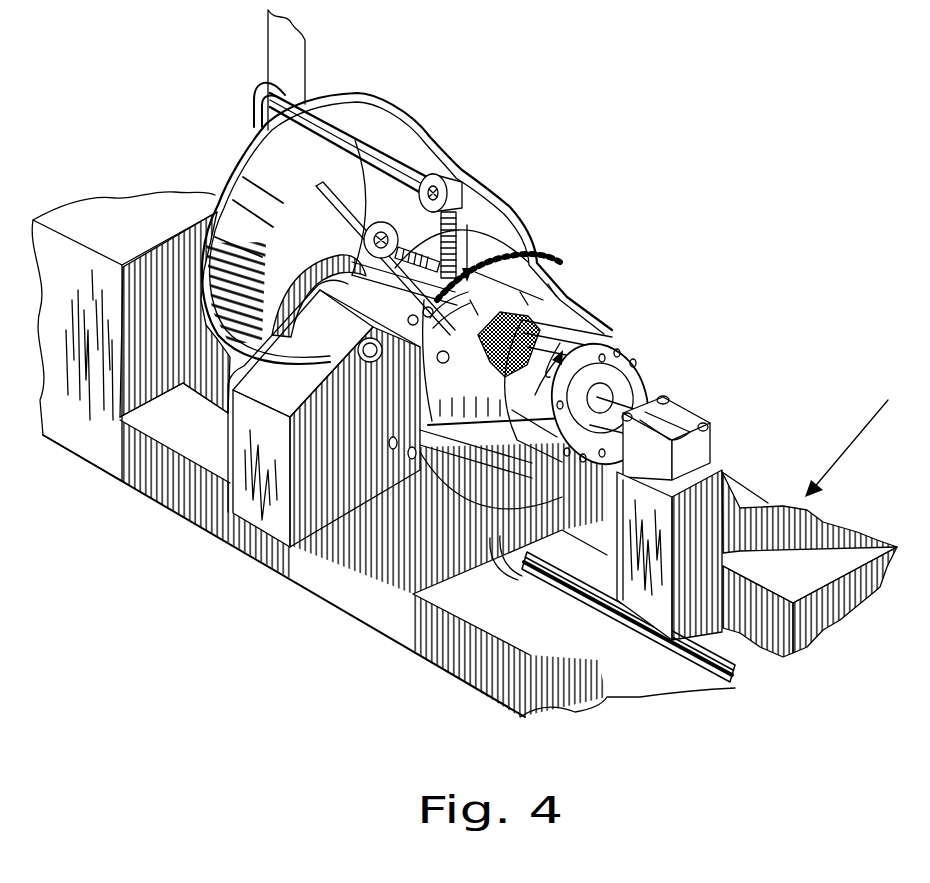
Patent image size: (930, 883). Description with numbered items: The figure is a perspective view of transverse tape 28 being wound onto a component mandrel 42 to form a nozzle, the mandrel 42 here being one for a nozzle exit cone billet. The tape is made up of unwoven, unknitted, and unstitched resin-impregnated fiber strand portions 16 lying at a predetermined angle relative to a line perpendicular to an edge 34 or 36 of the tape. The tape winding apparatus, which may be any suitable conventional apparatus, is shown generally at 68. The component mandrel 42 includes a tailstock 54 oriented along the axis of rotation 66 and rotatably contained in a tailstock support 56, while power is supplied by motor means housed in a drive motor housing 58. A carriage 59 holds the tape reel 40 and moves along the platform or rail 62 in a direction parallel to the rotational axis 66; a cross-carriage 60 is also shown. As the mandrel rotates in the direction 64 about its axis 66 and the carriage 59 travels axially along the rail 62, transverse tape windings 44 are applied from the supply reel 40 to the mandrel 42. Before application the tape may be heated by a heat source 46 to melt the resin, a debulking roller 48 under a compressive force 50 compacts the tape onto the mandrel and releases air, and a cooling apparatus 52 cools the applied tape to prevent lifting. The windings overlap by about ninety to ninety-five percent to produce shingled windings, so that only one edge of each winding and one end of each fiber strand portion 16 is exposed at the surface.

The fiber strand portions 16 is at (482, 262).
The transverse tape 28 is at (535, 262).
The edge of the tape 34 is at (522, 261).
The edge of the tape 36 is at (541, 279).
The material supply spool 40 is at (279, 295).
The component mandrel 42 is at (597, 332).
The transverse tape windings 44 is at (493, 258).
The heat source 46 is at (381, 229).
The debulking roller 48 is at (448, 302).
The compressive force 50 is at (477, 236).
The cooling apparatus 52 is at (457, 181).
The tailstock 54 is at (628, 400).
The tailstock support 56 is at (705, 458).
The drive motor housing 58 is at (100, 453).
The carriage 59 is at (393, 573).
The cross-carriage 60 is at (296, 549).
The platform 62 is at (530, 645).
The direction of rotation 64 is at (538, 375).
The axis of rotation 66 is at (768, 503).
The tape winding apparatus 68 is at (816, 517).